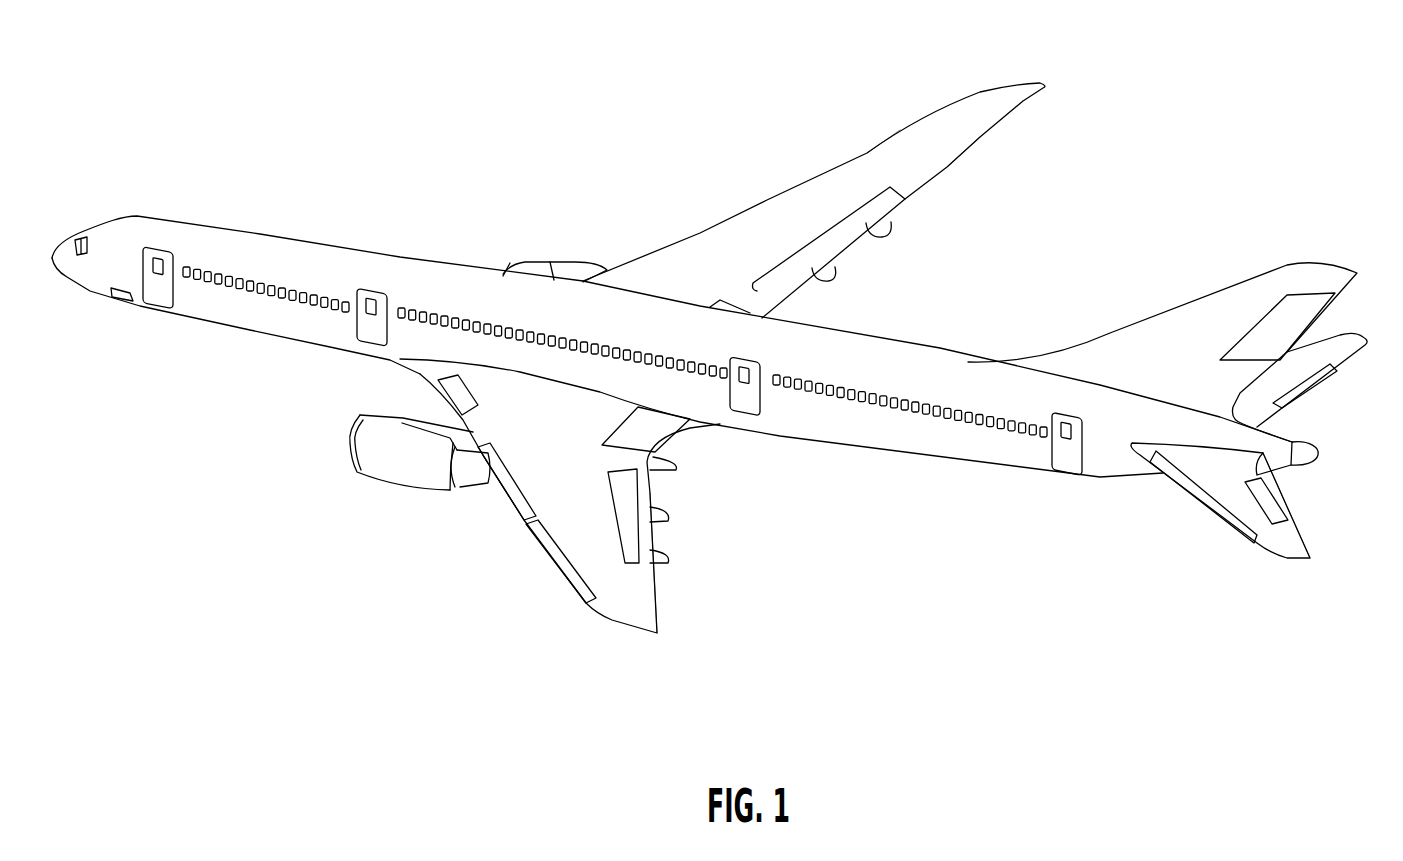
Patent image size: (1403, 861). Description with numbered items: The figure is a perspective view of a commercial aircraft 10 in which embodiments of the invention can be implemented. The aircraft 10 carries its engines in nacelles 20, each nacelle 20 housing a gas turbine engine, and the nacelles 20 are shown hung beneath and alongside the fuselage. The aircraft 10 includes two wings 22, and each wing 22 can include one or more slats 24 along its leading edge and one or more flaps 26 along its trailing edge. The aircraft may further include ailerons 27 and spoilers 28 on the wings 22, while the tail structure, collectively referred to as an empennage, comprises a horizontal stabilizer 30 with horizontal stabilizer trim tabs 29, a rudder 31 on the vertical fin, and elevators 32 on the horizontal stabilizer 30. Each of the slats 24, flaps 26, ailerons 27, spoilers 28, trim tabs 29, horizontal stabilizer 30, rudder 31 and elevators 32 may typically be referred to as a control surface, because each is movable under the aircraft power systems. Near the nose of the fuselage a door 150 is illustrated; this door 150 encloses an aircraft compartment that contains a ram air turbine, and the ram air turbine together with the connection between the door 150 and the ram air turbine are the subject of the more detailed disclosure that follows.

The commercial aircraft 10 is at (1222, 112).
The nacelle 20 is at (538, 270).
The wing 22 is at (818, 195).
The slat 24 is at (546, 556).
The flap 26 is at (862, 240).
The aileron 27 is at (968, 162).
The spoiler 28 is at (893, 138).
The horizontal stabilizer trim tab 29 is at (1188, 515).
The horizontal stabilizer 30 is at (1287, 543).
The rudder 31 is at (1278, 300).
The elevator 32 is at (1318, 390).
The door 150 is at (120, 305).